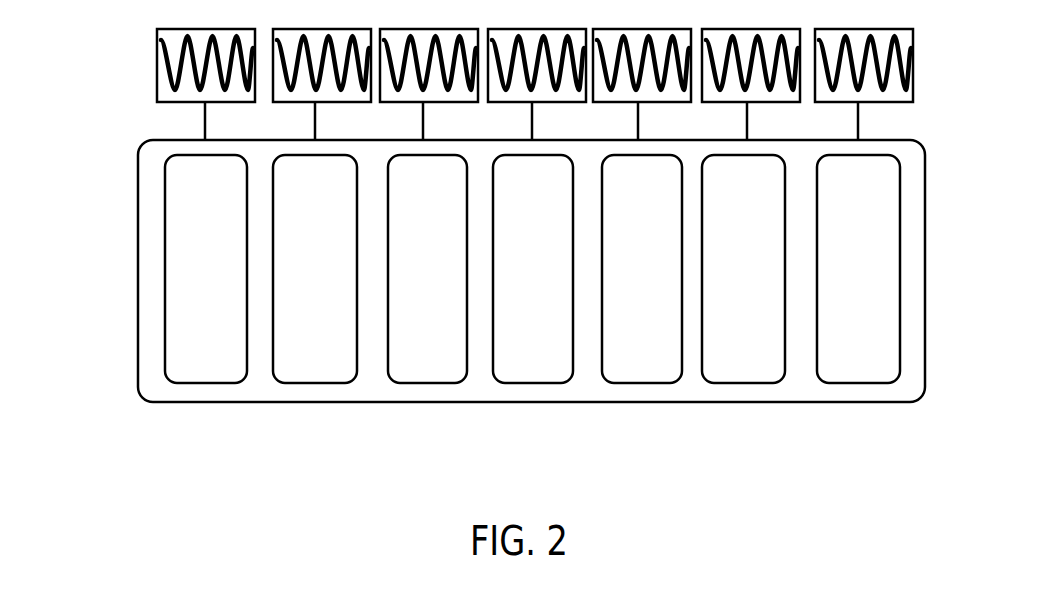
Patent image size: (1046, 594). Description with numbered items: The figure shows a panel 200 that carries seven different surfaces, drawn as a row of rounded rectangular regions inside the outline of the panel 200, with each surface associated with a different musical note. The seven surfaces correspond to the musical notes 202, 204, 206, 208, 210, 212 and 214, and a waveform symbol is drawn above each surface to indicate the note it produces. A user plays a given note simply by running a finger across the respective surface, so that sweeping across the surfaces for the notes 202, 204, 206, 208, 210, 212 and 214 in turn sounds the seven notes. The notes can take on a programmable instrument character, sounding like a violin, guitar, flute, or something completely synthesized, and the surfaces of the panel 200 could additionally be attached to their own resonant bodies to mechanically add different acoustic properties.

The panel 200 is at (80, 275).
The musical note 202 is at (205, 390).
The musical note 204 is at (312, 390).
The musical note 206 is at (433, 390).
The musical note 208 is at (535, 390).
The musical note 210 is at (643, 390).
The musical note 212 is at (745, 390).
The musical note 214 is at (860, 390).